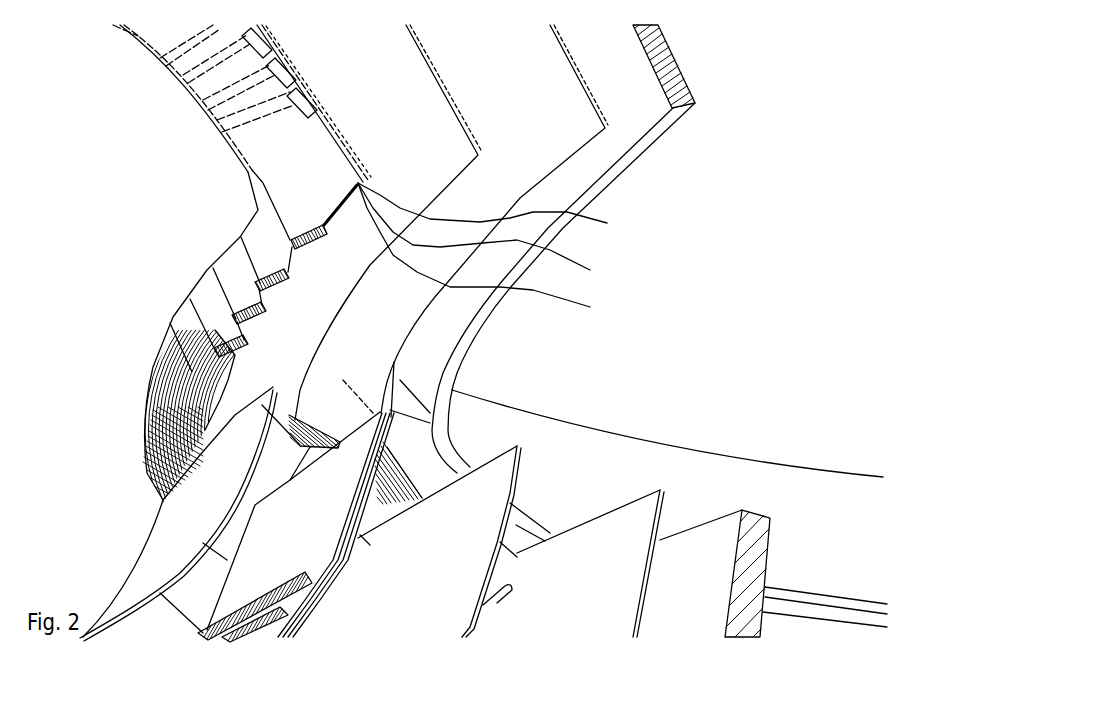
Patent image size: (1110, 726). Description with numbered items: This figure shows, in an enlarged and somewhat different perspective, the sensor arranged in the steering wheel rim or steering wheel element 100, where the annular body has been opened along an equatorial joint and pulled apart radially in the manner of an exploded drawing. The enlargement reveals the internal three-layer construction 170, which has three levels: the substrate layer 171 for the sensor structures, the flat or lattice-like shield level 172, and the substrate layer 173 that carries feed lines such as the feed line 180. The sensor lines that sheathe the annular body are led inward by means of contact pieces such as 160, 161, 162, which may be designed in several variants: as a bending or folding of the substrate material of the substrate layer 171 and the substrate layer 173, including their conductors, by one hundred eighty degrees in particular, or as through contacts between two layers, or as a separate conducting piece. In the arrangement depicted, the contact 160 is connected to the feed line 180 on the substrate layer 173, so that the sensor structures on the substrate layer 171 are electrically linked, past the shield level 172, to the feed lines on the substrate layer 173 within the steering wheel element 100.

The steering wheel element 100 is at (688, 129).
The contact piece 160 is at (316, 246).
The contact piece 161 is at (287, 283).
The contact piece 162 is at (262, 318).
The three-layer construction 170 is at (347, 137).
The substrate layer for sensor structures 171 is at (503, 212).
The shield level 172 is at (498, 234).
The substrate layer for feed lines 173 is at (494, 253).
The feed line 180 is at (270, 111).